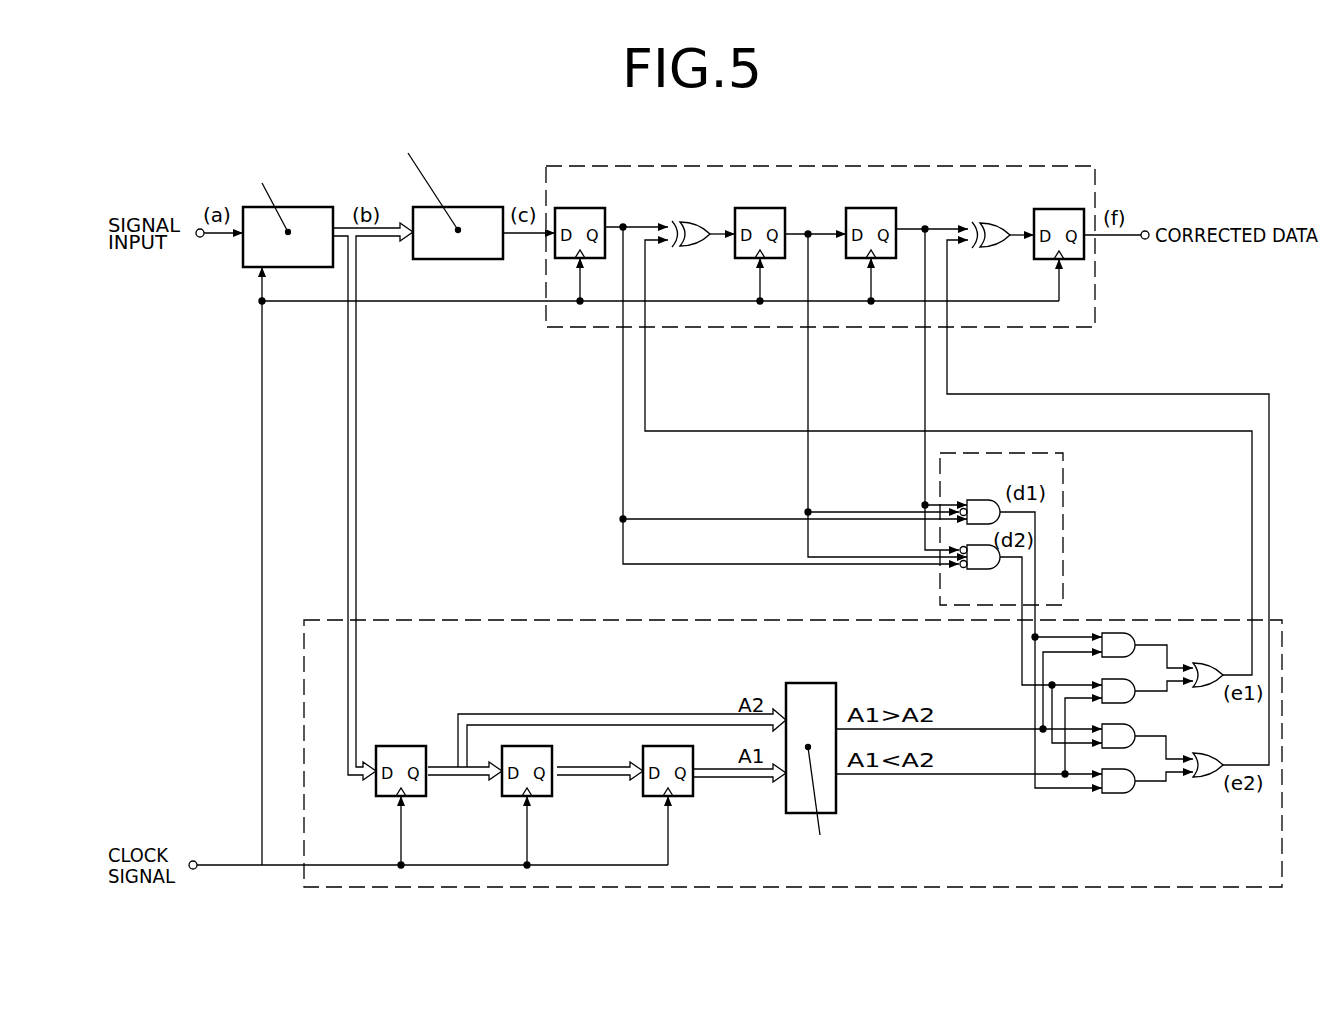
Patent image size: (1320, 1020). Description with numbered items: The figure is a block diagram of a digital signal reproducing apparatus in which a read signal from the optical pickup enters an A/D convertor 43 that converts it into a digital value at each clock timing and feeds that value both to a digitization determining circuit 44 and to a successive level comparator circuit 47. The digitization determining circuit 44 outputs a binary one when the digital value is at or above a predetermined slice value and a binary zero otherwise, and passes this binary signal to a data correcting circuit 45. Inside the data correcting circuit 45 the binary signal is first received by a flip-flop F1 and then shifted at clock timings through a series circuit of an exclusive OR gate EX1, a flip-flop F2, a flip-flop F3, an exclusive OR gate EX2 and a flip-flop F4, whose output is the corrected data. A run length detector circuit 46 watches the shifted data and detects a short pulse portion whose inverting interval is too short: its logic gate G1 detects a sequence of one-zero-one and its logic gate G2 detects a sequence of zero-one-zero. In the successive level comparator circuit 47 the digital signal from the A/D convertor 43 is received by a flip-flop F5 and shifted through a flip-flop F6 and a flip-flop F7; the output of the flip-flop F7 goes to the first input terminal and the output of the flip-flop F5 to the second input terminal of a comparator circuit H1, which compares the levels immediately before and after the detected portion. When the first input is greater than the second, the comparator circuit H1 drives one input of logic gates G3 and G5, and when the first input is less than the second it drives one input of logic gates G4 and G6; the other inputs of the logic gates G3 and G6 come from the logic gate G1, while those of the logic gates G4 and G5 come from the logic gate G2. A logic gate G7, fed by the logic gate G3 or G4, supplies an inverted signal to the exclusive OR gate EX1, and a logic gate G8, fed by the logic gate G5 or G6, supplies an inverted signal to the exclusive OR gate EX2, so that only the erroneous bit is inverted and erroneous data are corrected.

The A/D convertor 43 is at (318, 207).
The digitization determining circuit 44 is at (485, 207).
The data correcting circuit 45 is at (1068, 166).
The run length detector circuit 46 is at (1068, 479).
The successive level comparator circuit 47 is at (456, 620).
The flip-flop F1 is at (597, 208).
The flip-flop F2 is at (775, 208).
The flip-flop F3 is at (888, 208).
The flip-flop F4 is at (1067, 210).
The flip-flop F5 is at (415, 746).
The flip-flop F6 is at (553, 762).
The flip-flop F7 is at (690, 761).
The exclusive OR gate EX1 is at (691, 221).
The exclusive OR gate EX2 is at (989, 223).
The logic gate G1 is at (991, 502).
The logic gate G2 is at (988, 569).
The logic gate G3 is at (1120, 632).
The logic gate G4 is at (1124, 687).
The logic gate G5 is at (1130, 728).
The logic gate G6 is at (1120, 794).
The logic gate G7 is at (1206, 664).
The logic gate G8 is at (1207, 752).
The comparator circuit H1 is at (817, 683).